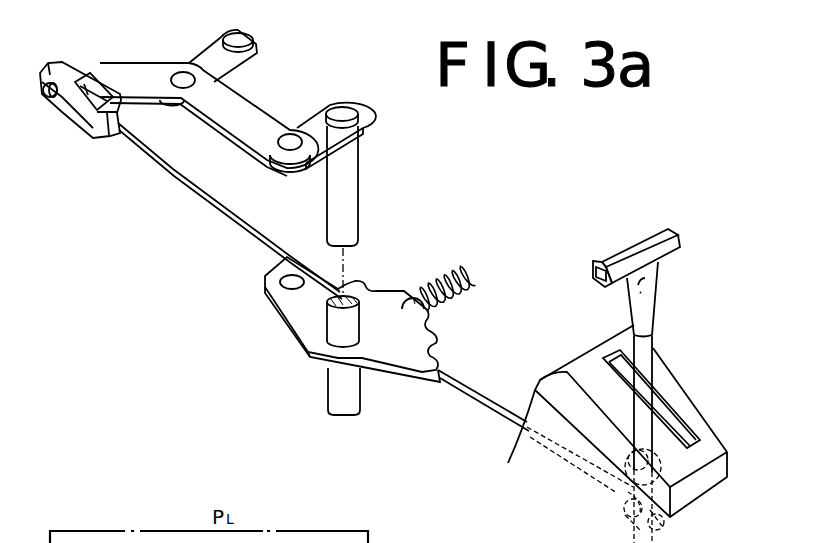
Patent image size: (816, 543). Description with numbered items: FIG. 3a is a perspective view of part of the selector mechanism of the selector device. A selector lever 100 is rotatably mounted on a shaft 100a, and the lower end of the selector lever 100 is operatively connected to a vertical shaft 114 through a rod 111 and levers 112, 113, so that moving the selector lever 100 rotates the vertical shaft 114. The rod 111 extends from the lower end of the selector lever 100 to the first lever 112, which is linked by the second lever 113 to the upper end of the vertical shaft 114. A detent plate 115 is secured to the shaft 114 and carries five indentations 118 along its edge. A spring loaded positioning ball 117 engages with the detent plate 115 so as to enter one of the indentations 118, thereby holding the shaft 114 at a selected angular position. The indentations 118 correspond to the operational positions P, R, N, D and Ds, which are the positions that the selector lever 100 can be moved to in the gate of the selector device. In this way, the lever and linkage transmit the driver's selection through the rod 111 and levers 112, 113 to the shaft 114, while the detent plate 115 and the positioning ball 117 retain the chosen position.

The selector lever 100 is at (635, 245).
The shaft 100a is at (607, 485).
The rod 111 is at (173, 172).
The lever 112 is at (136, 72).
The lever 113 is at (318, 127).
The vertical shaft 114 is at (357, 181).
The detent plate 115 is at (385, 352).
The spring loaded positioning ball 117 is at (413, 290).
The indentations 118 is at (432, 322).